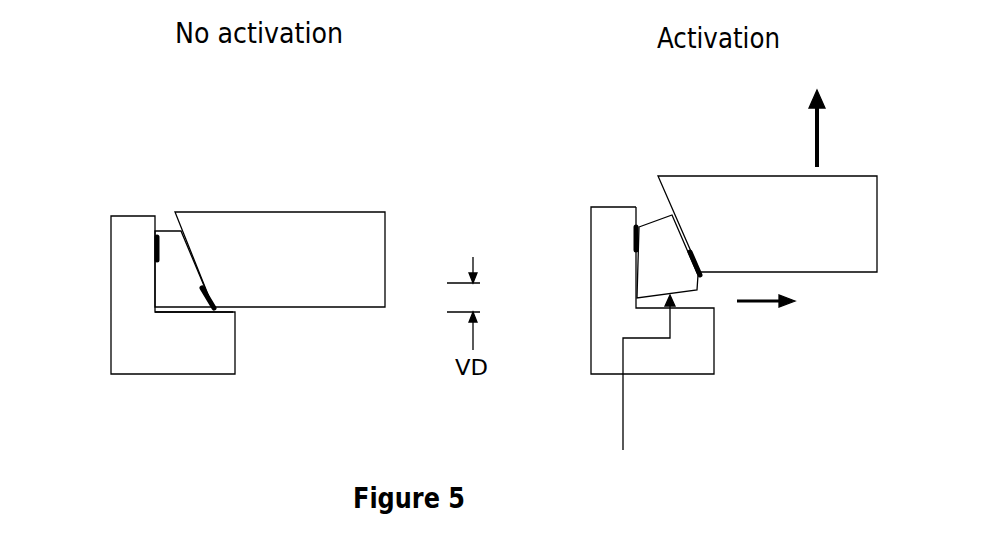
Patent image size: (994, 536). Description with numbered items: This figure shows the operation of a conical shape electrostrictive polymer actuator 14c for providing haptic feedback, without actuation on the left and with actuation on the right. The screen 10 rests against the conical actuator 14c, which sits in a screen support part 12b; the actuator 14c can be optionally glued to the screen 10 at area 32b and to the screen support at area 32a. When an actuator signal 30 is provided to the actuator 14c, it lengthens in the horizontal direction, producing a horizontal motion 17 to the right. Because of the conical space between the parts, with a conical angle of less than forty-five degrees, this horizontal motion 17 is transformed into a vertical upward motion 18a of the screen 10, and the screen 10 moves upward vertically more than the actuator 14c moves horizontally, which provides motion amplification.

The screen 10 is at (278, 210).
The housing portion 12b is at (132, 217).
The conical shape electrostrictive polymer actuator 14c is at (171, 287).
The area 32a is at (156, 262).
The area 32b is at (213, 303).
The vertical upward motion 18a is at (817, 123).
The horizontal motion 17 is at (767, 302).
The actuator signal 30 is at (623, 390).